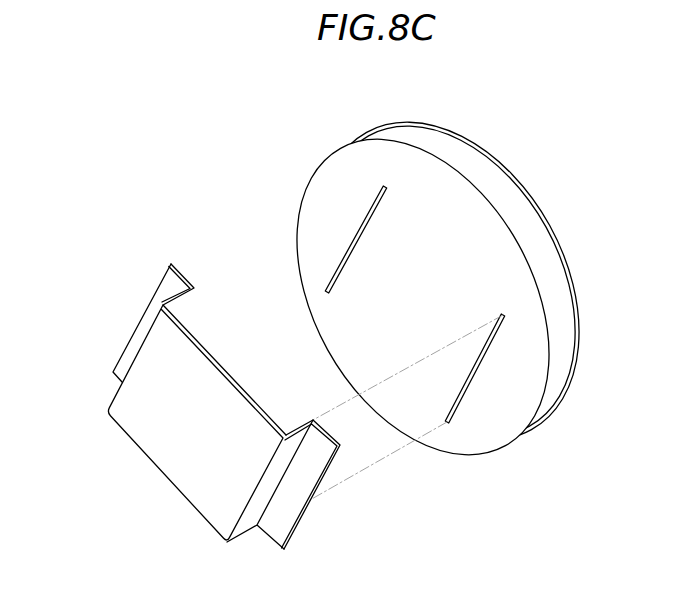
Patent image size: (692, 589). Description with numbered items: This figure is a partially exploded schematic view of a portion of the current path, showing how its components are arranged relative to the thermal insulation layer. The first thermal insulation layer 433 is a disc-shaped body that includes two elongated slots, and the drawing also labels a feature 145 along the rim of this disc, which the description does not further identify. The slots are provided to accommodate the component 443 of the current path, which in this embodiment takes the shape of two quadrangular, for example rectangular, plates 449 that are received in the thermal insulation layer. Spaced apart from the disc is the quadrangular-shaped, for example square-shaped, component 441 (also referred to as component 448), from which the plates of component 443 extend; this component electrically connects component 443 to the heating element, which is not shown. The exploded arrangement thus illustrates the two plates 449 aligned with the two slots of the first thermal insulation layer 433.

The flange rim 145 is at (557, 235).
The first thermal insulation layer 433 is at (490, 182).
The quadrangular-shaped component 441 is at (237, 412).
The component of the current path 443 is at (190, 303).
The quadrangular-shaped component 448 is at (213, 487).
The quadrangular plates 449 is at (182, 315).